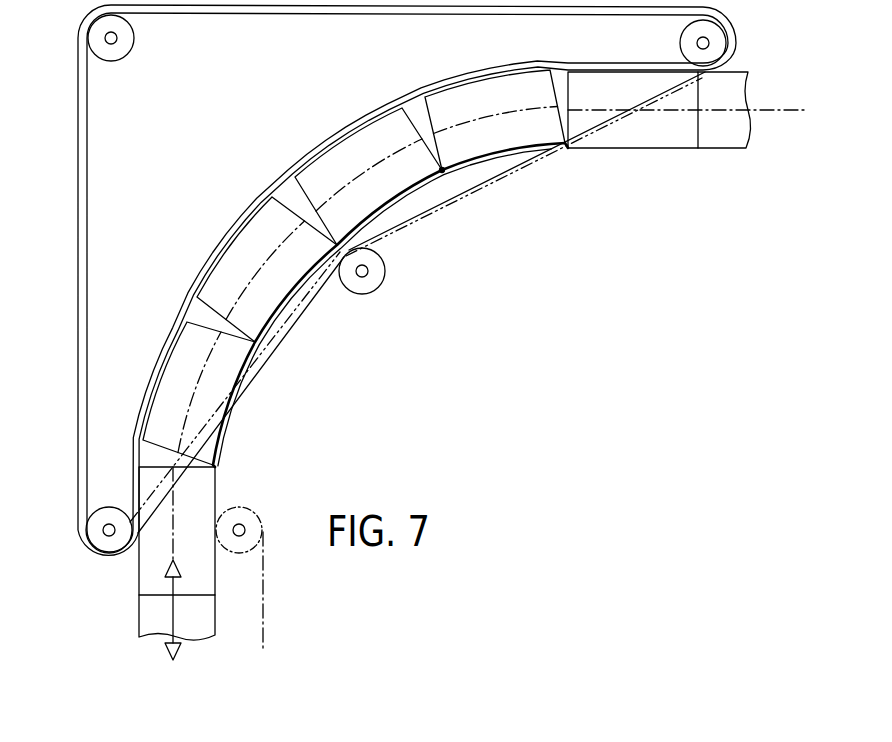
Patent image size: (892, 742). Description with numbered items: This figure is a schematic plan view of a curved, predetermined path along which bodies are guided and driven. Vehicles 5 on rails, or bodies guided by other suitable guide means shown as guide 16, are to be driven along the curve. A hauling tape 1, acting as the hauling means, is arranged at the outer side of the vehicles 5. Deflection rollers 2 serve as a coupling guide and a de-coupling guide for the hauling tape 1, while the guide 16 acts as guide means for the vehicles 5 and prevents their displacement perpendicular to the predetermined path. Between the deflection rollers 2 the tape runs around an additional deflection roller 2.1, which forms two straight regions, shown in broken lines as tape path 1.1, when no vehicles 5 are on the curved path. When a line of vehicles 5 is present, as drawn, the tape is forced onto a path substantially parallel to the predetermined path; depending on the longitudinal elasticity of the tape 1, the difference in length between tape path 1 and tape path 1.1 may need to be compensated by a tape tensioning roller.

The hauling tape 1 is at (78, 249).
The tape path 1.1 is at (503, 177).
The deflection rollers 2 is at (123, 50).
The additional deflection roller 2.1 is at (377, 280).
The vehicles 5 is at (658, 132).
The guide 16 is at (450, 175).